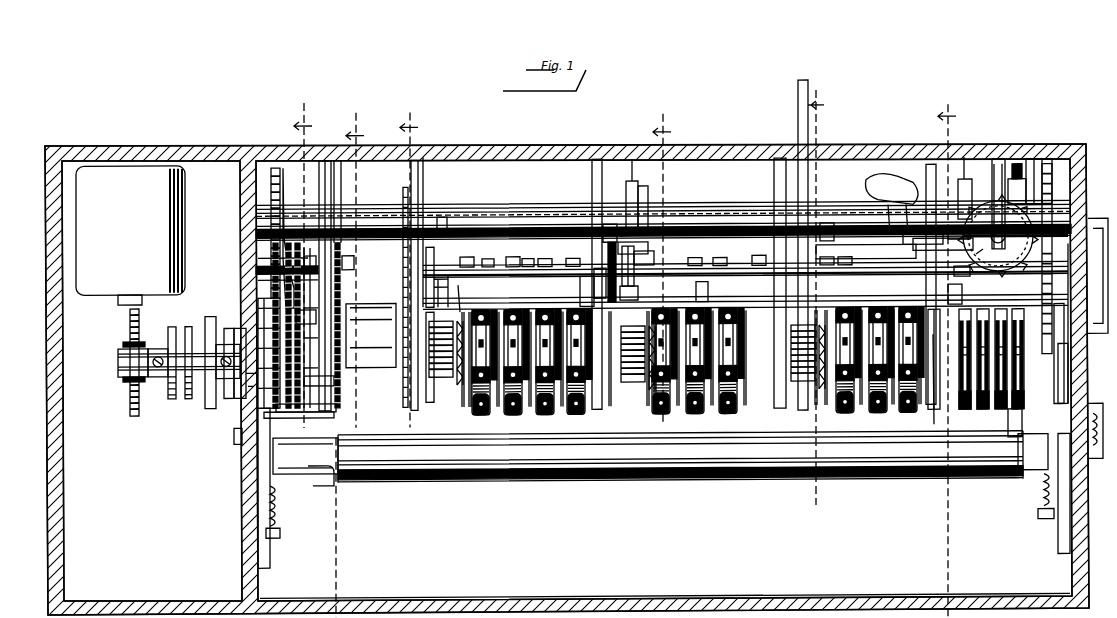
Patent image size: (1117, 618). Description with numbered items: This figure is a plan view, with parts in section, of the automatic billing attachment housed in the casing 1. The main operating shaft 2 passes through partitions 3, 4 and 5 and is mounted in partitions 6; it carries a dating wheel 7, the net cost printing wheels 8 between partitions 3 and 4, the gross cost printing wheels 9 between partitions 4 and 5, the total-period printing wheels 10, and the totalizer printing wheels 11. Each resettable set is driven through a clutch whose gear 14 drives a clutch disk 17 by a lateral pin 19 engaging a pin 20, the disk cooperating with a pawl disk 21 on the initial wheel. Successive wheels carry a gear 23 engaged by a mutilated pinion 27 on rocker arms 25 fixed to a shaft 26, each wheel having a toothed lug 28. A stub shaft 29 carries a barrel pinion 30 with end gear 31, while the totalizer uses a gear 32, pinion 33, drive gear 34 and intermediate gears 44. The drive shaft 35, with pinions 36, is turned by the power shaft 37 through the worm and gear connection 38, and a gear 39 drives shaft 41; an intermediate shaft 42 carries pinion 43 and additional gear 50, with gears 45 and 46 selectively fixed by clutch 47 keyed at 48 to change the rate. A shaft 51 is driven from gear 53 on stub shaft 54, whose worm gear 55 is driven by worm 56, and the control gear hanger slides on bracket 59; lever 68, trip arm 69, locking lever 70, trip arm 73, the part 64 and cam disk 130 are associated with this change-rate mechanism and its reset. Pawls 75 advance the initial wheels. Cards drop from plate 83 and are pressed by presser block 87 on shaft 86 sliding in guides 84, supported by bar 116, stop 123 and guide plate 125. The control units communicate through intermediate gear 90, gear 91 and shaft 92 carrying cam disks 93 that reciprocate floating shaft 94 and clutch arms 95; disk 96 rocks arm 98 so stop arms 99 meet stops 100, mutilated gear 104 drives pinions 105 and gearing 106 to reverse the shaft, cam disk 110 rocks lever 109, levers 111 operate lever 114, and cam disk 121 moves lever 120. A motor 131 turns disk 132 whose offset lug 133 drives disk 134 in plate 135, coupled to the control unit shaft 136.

The casing 1 is at (522, 137).
The main operating shaft 2 is at (571, 409).
The partition 3 is at (411, 176).
The partition 4 is at (594, 176).
The partition 5 is at (766, 176).
The partition 6 is at (922, 230).
The dating wheel 7 is at (393, 415).
The printing wheels 8 is at (503, 362).
The printing wheels 9 is at (687, 409).
The printing wheels 10 is at (890, 409).
The printing wheels 11 is at (980, 405).
The gear 14 is at (452, 395).
The clutch disk 17 is at (462, 400).
The lateral pin 19 is at (447, 287).
The pin 20 is at (456, 295).
The pawl disk 21 is at (470, 438).
The gear 23 is at (500, 409).
The rocker arms 25 is at (491, 258).
The shaft 26 is at (443, 258).
The mutilated pinion 27 is at (538, 253).
The toothed lug 28 is at (700, 300).
The stub shaft 29 is at (426, 365).
The barrel pinion 30 is at (433, 372).
The end gear 31 is at (602, 400).
The gear 32 is at (926, 420).
The pinion 33 is at (938, 296).
The drive gear 34 is at (944, 280).
The drive shaft 35 is at (840, 253).
The pinions 36 is at (744, 236).
The power shaft 37 is at (790, 112).
The worm and gear connection 38 is at (827, 251).
The gear 39 is at (1075, 320).
The shaft 41 is at (690, 256).
The intermediate shaft 42 is at (524, 257).
The pinion 43 is at (580, 284).
The intermediate gears 44 is at (928, 405).
The gear 45 is at (568, 253).
The gear 46 is at (646, 250).
The clutch 47 is at (626, 250).
The key 48 is at (612, 270).
The additional gear 50 is at (623, 291).
The shaft 51 is at (1004, 198).
The gear 53 is at (1026, 228).
The stub shaft 54 is at (982, 228).
The worm gear 55 is at (1012, 228).
The worm 56 is at (972, 244).
The bracket 59 is at (1026, 155).
The bar 64 is at (840, 240).
The lever 68 is at (923, 241).
The trip arm 69 is at (876, 172).
The locking lever 70 is at (646, 226).
The trip arm 73 is at (955, 172).
The pawl 75 is at (598, 250).
The plate 83 is at (248, 370).
The guides 84 is at (262, 548).
The shaft 86 is at (312, 480).
The presser block 87 is at (506, 474).
The intermediate gear 90 is at (248, 290).
The gear 91 is at (264, 190).
The shaft 92 is at (360, 200).
The cam disk 93 is at (284, 210).
The floating shaft 94 is at (476, 225).
The clutch arms 95 is at (434, 210).
The disk 96 is at (319, 384).
The arm 98 is at (350, 300).
The stop arms 99 is at (460, 252).
The stop 100 is at (476, 305).
The mutilated gear 104 is at (306, 412).
The pinions 105 is at (311, 310).
The gearing 106 is at (333, 256).
The lever 109 is at (245, 322).
The cam disk 110 is at (1062, 368).
The levers 111 is at (1060, 396).
The lever 114 is at (247, 386).
The bar 116 is at (1000, 430).
The lever 120 is at (225, 428).
The cam disk 121 is at (652, 346).
The stop 123 is at (287, 485).
The guide plate 125 is at (665, 571).
The cam disk 130 is at (628, 178).
The motor 131 is at (88, 287).
The disk 132 is at (160, 395).
The offset lug 133 is at (164, 318).
The disk 134 is at (189, 319).
The plate 135 is at (200, 396).
The control unit shaft 136 is at (288, 410).